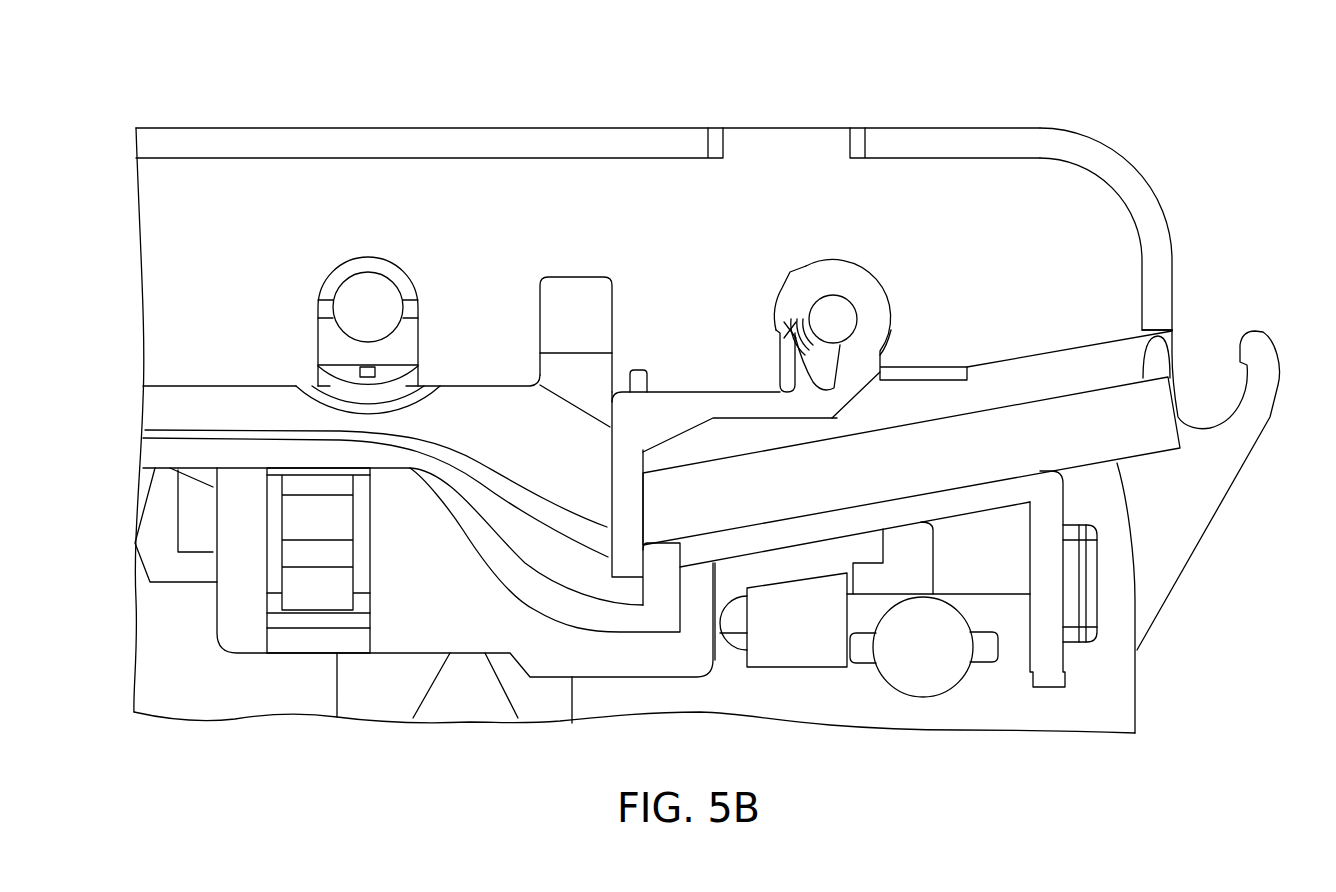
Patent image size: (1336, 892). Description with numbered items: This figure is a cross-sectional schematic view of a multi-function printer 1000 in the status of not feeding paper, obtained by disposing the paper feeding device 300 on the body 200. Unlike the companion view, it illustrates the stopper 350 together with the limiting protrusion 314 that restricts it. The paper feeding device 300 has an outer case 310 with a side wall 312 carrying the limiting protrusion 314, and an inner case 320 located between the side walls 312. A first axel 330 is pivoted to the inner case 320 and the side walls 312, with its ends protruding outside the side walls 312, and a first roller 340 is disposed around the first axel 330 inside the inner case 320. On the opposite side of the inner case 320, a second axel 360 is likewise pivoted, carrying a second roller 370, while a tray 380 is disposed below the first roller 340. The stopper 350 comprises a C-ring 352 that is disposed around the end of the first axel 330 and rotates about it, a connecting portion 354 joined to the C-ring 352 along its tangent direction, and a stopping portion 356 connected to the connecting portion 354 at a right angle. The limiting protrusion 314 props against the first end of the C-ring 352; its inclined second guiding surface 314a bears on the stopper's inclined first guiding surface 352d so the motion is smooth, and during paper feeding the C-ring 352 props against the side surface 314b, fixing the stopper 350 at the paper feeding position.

The body 200 is at (232, 614).
The paper feeding device 300 is at (1185, 150).
The outer case 310 is at (513, 140).
The side wall 312 is at (1062, 198).
The limiting protrusion 314 is at (765, 357).
The second guiding surface 314a is at (780, 371).
The side surface 314b is at (838, 310).
The inner case 320 is at (570, 298).
The first axel 330 is at (845, 262).
The first roller 340 is at (822, 376).
The stopper 350 is at (913, 294).
The C-ring 352 is at (870, 317).
The first guiding surface 352d is at (791, 332).
The connecting portion 354 is at (742, 410).
The stopping portion 356 is at (626, 548).
The second axel 360 is at (368, 302).
The second roller 370 is at (331, 397).
The tray 380 is at (998, 493).
The multi-function printer 1000 is at (1217, 802).